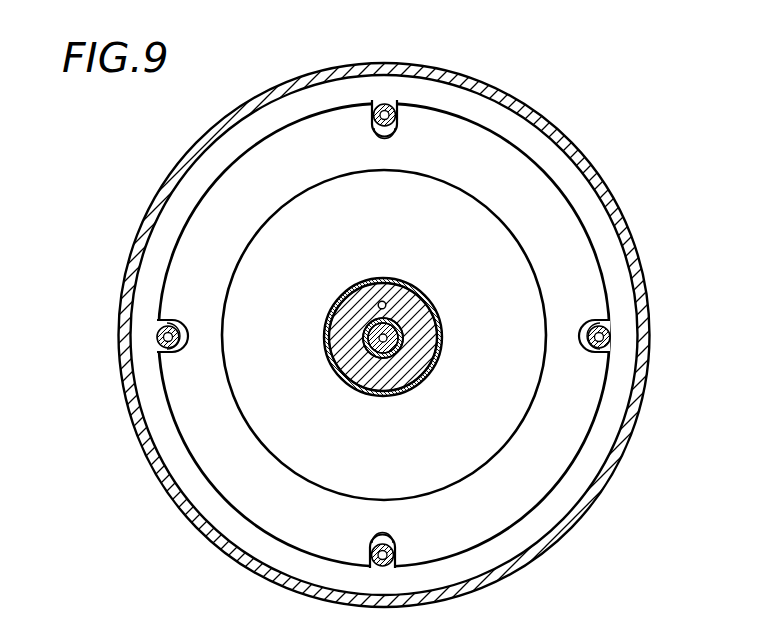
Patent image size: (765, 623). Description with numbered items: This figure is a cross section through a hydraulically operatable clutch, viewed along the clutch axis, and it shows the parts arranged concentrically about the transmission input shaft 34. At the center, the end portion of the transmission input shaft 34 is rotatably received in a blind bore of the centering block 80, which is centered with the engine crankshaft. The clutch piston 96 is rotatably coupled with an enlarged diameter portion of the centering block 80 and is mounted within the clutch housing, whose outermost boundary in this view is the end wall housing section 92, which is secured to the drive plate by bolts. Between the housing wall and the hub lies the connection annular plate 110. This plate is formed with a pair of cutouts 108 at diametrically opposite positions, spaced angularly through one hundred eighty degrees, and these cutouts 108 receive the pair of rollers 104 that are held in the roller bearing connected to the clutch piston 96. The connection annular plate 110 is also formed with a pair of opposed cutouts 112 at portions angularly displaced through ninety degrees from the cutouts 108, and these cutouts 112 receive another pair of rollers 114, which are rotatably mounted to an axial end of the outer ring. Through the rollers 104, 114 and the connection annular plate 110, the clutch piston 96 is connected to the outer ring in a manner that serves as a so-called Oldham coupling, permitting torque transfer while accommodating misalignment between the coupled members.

The end wall housing section 92 is at (537, 123).
The connection annular plate 110 is at (543, 188).
The centering block 80 is at (418, 313).
The clutch piston 96 is at (382, 278).
The transmission input shaft 34 is at (402, 353).
The rollers 104 is at (386, 100).
The cutouts 108 is at (397, 124).
The cutouts 112 is at (168, 327).
The rollers 114 is at (163, 338).